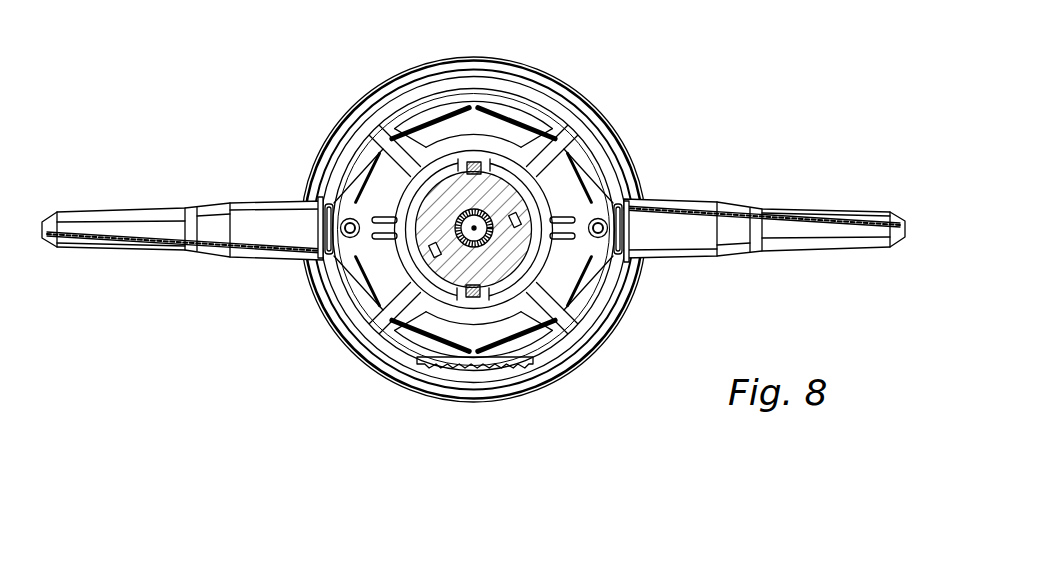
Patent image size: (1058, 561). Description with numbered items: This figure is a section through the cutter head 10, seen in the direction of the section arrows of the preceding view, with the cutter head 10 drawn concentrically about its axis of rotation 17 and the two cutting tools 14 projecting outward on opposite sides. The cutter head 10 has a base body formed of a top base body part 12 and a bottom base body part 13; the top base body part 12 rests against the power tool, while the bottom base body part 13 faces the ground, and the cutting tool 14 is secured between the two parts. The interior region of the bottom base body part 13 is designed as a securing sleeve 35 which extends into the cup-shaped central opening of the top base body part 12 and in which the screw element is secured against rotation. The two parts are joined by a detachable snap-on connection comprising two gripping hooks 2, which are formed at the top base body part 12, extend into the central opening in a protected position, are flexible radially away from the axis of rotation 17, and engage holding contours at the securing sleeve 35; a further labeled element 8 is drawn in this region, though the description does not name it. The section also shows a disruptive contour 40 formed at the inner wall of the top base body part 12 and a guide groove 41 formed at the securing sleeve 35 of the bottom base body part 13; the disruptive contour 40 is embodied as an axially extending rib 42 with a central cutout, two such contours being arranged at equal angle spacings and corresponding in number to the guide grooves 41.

The cutter head 10 is at (248, 106).
The cutting tool 14 is at (88, 210).
The bottom base body part 13 is at (625, 143).
The gripping hook 2 is at (535, 196).
The clamp plate 8 is at (541, 258).
The top base body part 12 is at (521, 158).
The axis of rotation 17 is at (553, 328).
The securing sleeve 35 is at (441, 163).
The guide groove 41 is at (446, 163).
The disruptive contour 40 is at (473, 162).
The rib 42 is at (493, 368).